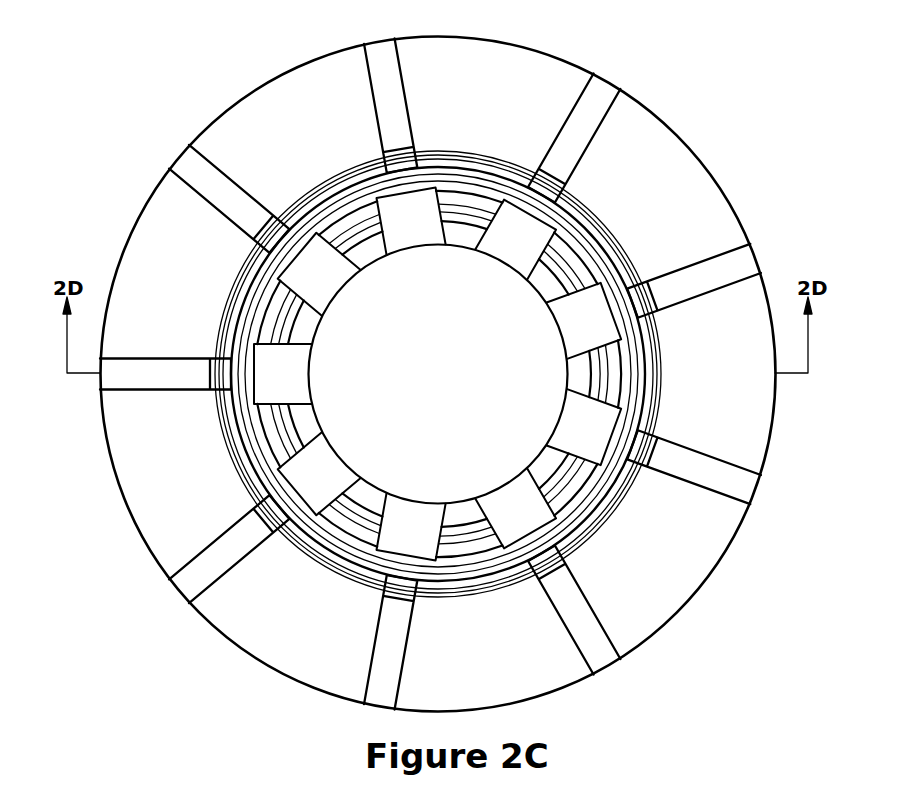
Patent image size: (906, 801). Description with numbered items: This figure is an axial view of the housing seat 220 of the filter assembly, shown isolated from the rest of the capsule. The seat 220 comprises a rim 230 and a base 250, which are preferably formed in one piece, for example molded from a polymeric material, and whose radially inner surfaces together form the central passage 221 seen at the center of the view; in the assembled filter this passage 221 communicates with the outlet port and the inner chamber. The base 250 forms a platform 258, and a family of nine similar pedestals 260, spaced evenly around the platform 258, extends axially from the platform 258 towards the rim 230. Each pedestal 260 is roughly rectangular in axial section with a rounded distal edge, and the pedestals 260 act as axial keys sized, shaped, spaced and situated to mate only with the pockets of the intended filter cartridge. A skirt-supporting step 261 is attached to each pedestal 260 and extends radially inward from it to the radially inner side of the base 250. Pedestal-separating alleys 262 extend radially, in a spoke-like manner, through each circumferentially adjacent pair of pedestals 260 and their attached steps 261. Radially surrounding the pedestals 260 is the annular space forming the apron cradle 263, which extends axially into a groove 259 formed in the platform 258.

The housing seat 220 is at (249, 58).
The rim 230 is at (232, 130).
The central passage 221 is at (450, 368).
The base 250 is at (352, 510).
The platform 258 is at (320, 472).
The groove 259 is at (307, 527).
The pedestals 260 is at (348, 227).
The skirt-supporting steps 261 is at (363, 252).
The pedestal-separating alleys 262 is at (398, 216).
The apron cradle 263 is at (477, 197).